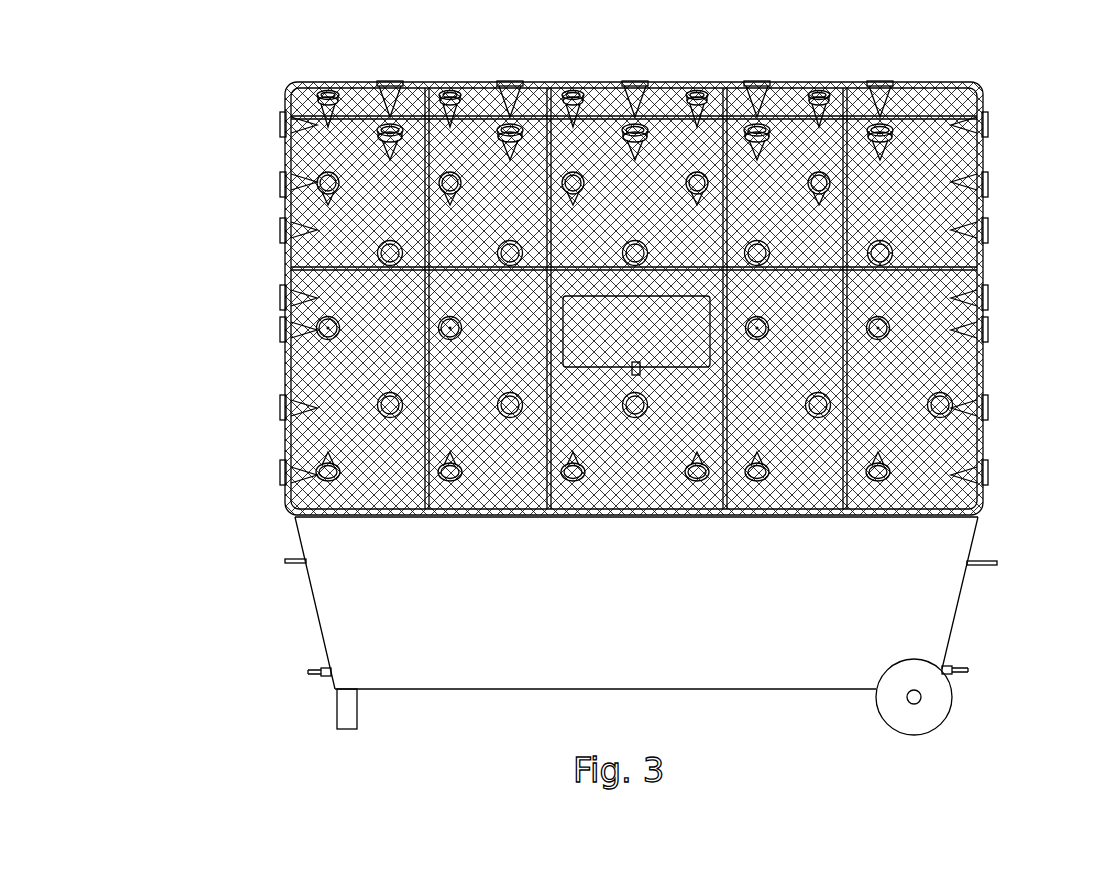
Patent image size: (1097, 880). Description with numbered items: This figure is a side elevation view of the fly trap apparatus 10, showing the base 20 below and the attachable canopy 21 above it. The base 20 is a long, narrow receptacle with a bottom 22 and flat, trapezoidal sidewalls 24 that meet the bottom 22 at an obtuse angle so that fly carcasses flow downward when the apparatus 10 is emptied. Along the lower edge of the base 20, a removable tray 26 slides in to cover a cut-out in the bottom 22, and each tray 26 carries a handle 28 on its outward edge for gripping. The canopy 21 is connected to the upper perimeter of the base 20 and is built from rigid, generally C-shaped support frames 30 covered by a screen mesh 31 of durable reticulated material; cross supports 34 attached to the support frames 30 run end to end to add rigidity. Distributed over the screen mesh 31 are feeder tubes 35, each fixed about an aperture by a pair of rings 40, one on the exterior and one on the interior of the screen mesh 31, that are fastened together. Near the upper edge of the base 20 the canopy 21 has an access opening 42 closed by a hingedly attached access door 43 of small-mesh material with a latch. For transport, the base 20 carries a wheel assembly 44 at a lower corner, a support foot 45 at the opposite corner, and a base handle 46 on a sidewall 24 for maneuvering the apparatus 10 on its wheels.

The apparatus 10 is at (166, 170).
The base 20 is at (979, 606).
The canopy 21 is at (1012, 225).
The bottom 22 is at (720, 690).
The sidewalls 24 is at (323, 587).
The removable tray 26 is at (324, 678).
The handle 28 is at (312, 673).
The support frame 30 is at (290, 88).
The screen mesh 31 is at (938, 292).
The cross support 34 is at (358, 113).
The feeder tube 35 is at (315, 332).
The ring 40 is at (645, 83).
The access opening 42 is at (655, 375).
The access door 43 is at (597, 360).
The wheel assembly 44 is at (937, 715).
The support foot 45 is at (350, 712).
The base handle 46 is at (285, 562).